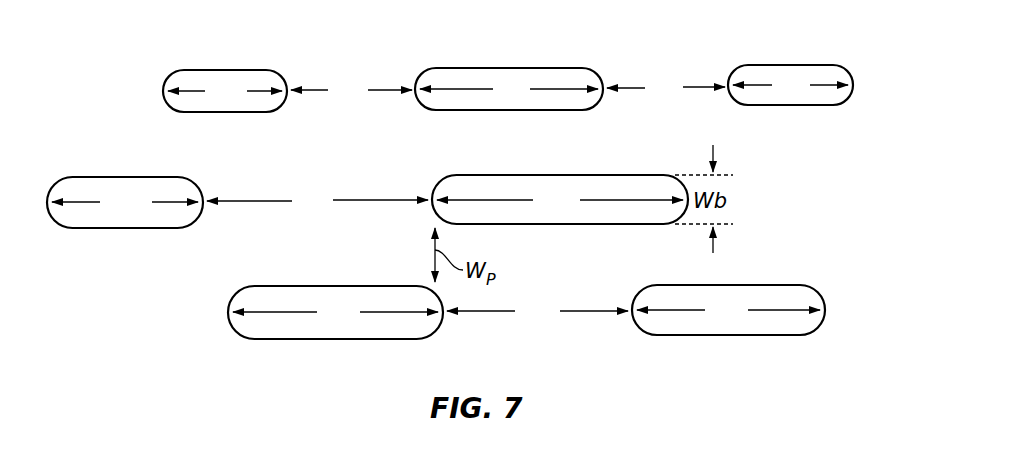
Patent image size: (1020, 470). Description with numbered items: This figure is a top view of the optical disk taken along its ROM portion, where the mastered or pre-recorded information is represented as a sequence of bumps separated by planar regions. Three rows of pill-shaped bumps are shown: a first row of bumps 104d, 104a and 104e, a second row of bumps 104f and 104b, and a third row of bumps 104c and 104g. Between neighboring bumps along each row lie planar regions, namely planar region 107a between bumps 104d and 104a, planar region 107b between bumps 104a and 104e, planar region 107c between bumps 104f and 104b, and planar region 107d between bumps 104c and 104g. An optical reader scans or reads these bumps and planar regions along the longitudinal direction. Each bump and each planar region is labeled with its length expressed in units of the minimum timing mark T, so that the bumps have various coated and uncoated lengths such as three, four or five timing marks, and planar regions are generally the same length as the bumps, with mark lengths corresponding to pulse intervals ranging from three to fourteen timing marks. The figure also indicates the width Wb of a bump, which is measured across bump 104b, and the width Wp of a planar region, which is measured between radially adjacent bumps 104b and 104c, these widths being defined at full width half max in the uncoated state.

The bump 104a is at (505, 68).
The bump 104b is at (553, 175).
The bump 104c is at (330, 286).
The bump 104d is at (223, 70).
The bump 104e is at (795, 65).
The bump 104f is at (120, 177).
The bump 104g is at (728, 285).
The planar region 107a is at (383, 72).
The planar region 107b is at (697, 73).
The planar region 107c is at (360, 190).
The planar region 107d is at (588, 308).